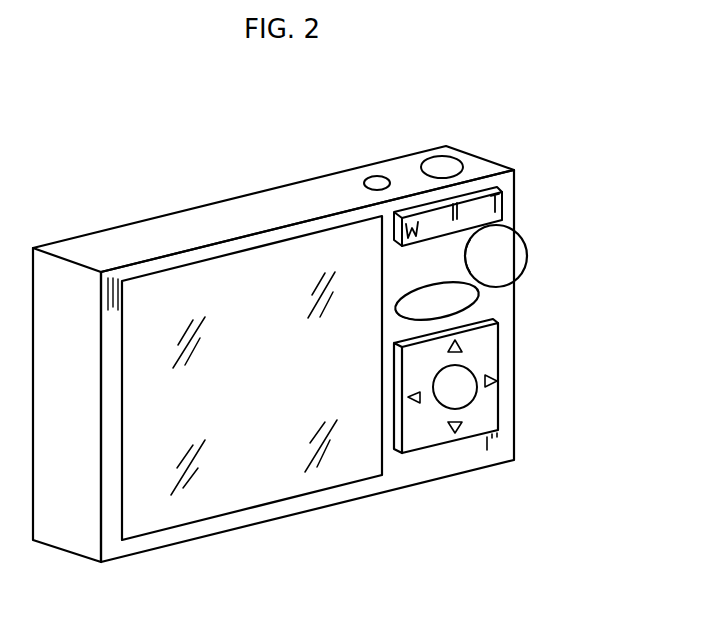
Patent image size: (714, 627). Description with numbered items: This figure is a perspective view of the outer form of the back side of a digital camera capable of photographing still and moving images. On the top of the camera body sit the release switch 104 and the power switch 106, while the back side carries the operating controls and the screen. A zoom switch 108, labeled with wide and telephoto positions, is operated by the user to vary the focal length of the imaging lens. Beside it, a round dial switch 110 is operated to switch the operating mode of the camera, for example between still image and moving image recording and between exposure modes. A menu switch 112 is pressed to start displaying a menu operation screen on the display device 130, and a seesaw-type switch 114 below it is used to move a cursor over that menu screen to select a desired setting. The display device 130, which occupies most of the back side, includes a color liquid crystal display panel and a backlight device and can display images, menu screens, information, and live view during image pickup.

The release switch 104 is at (438, 162).
The power switch 106 is at (378, 176).
The zoom switch 108 is at (499, 207).
The dial switch 110 is at (518, 257).
The menu switch 112 is at (478, 299).
The seesaw-type switch 114 is at (490, 398).
The display device 130 is at (268, 480).